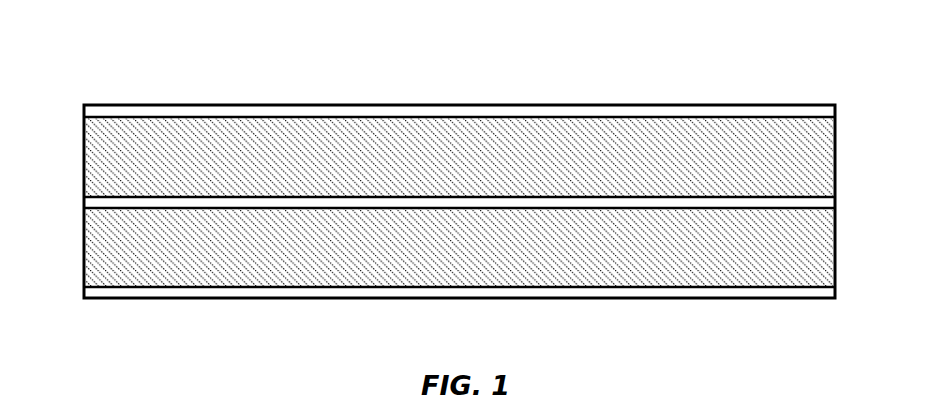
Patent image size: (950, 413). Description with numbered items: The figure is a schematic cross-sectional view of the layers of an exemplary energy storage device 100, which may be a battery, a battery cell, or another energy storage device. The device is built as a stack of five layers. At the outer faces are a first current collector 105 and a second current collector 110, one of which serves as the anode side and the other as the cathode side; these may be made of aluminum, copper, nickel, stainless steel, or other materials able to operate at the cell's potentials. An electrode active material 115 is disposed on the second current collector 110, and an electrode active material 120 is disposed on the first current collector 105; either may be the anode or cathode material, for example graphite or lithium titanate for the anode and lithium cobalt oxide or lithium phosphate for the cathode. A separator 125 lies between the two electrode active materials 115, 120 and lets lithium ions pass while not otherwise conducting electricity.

The energy storage device 100 is at (103, 83).
The first current collector 105 is at (254, 300).
The second current collector 110 is at (684, 105).
The electrode active material 115 is at (838, 152).
The electrode active material 120 is at (838, 253).
The separator 125 is at (83, 199).